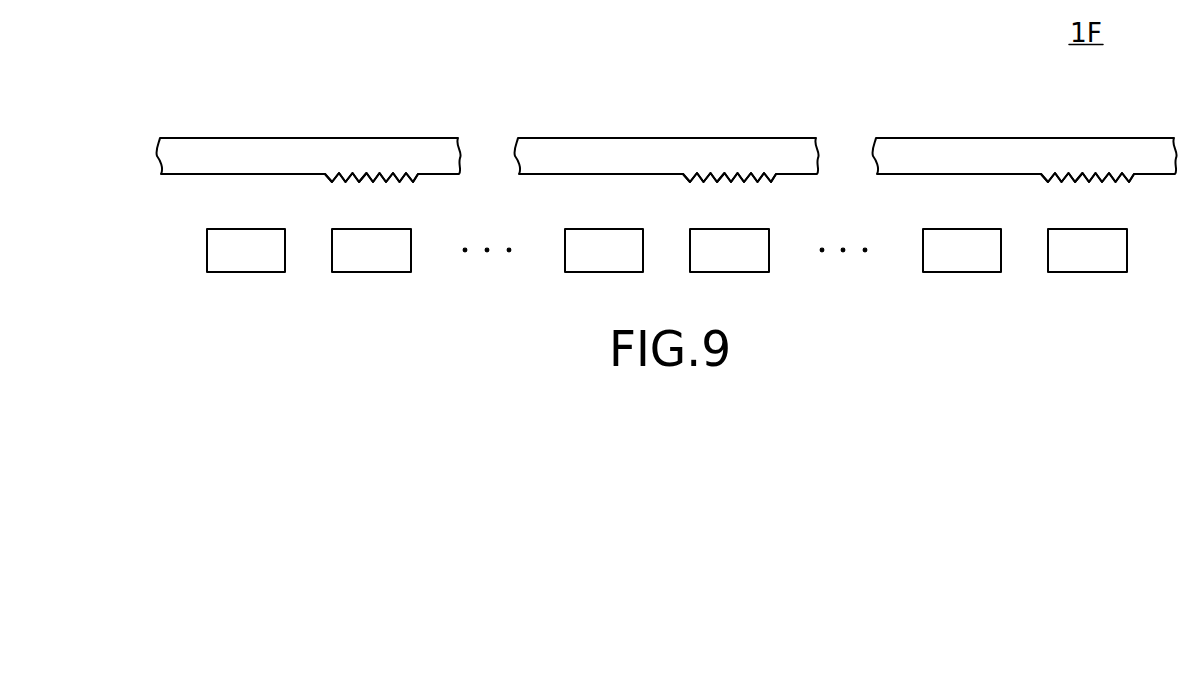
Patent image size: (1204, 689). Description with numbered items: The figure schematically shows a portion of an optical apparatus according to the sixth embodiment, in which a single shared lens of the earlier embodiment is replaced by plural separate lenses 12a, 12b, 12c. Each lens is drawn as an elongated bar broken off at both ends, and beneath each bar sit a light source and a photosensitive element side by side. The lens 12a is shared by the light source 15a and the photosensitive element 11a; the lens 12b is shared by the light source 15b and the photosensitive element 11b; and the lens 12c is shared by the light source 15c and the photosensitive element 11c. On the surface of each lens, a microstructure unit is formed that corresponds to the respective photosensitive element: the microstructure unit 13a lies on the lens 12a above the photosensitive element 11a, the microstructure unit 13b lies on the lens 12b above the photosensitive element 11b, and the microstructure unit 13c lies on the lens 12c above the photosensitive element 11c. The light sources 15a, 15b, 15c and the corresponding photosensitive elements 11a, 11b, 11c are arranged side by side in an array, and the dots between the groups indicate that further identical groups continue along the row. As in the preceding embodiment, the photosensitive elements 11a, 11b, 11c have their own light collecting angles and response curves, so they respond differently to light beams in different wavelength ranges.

The photosensitive element 11a is at (382, 243).
The photosensitive element 11b is at (758, 231).
The photosensitive element 11c is at (1116, 231).
The lens 12a is at (267, 143).
The lens 12b is at (666, 143).
The lens 12c is at (1024, 143).
The microstructure unit 13a is at (352, 186).
The microstructure unit 13b is at (706, 197).
The microstructure unit 13c is at (1064, 197).
The light source 15a is at (254, 243).
The light source 15b is at (584, 231).
The light source 15c is at (942, 231).